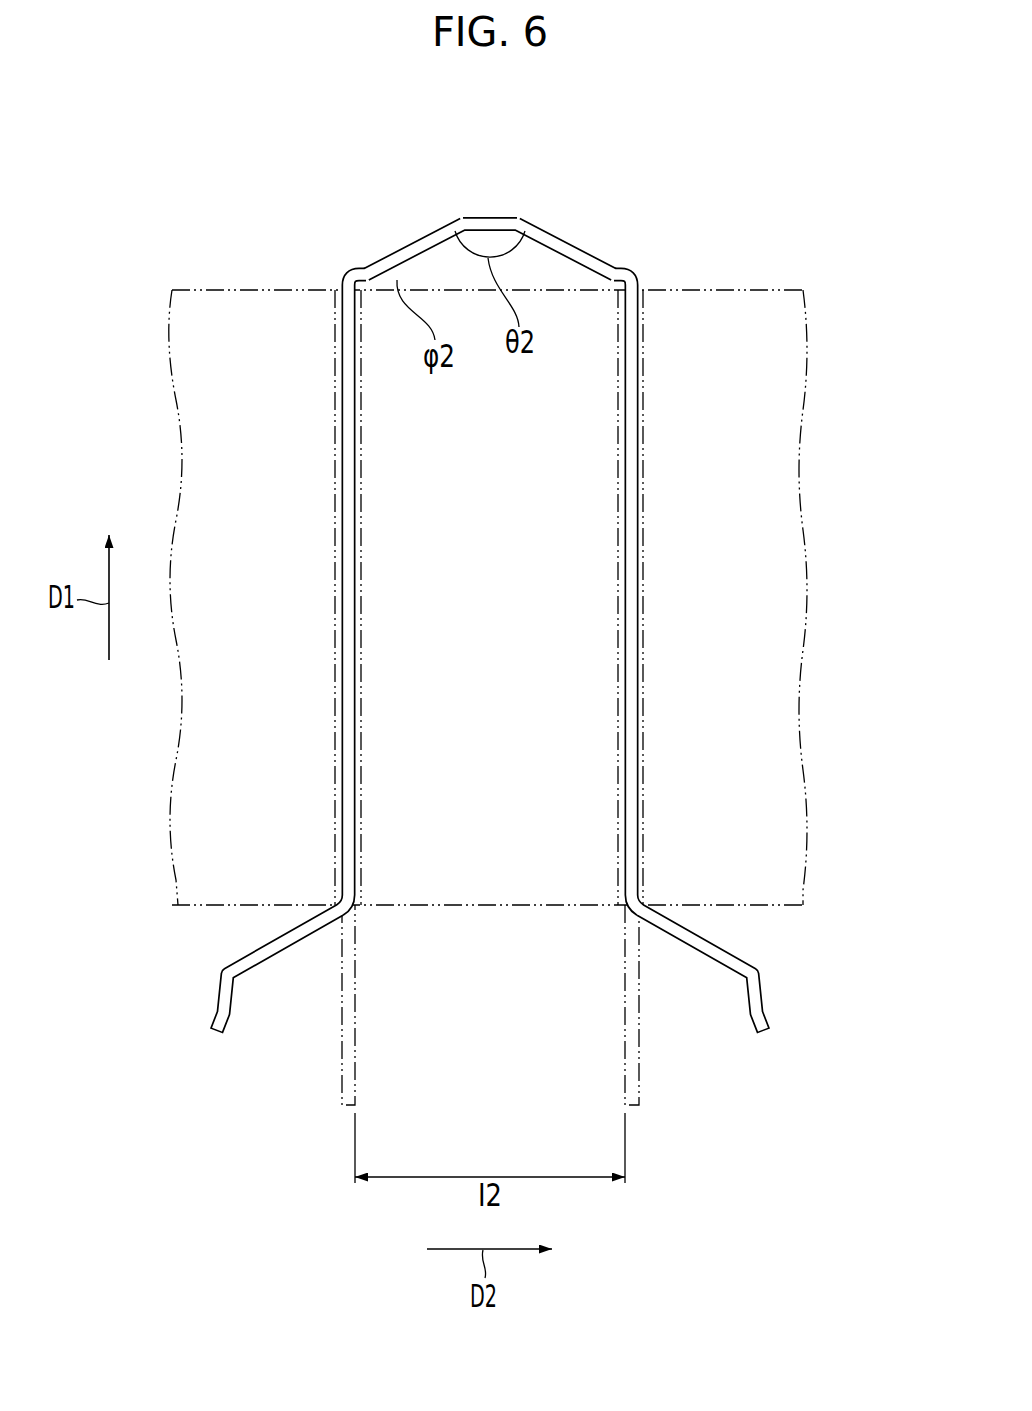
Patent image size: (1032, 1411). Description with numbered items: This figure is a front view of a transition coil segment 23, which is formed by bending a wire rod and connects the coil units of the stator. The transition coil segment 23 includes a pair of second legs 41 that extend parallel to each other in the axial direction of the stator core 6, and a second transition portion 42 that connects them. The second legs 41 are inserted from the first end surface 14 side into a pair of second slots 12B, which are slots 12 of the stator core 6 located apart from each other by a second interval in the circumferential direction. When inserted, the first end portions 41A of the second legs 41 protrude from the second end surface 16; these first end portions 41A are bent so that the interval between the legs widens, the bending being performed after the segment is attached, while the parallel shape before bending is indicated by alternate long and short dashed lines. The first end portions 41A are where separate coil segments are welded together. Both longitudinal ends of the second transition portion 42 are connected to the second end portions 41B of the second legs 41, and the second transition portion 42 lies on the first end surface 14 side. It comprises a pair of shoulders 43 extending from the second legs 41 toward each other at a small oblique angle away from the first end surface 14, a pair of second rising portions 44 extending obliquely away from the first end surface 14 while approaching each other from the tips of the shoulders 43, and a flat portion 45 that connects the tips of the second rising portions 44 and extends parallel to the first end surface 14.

The stator core 6 is at (191, 280).
The slot 12 is at (490, 597).
The second slot 12B is at (323, 450).
The first end surface 14 is at (773, 290).
The second end surface 16 is at (775, 907).
The transition coil segment 23 is at (504, 590).
The second leg 41 is at (328, 605).
The first end portion 41A is at (277, 938).
The second end portion 41B is at (340, 297).
The second transition portion 42 is at (491, 198).
The shoulder 43 is at (357, 262).
The second rising portion 44 is at (427, 236).
The flat portion 45 is at (487, 217).